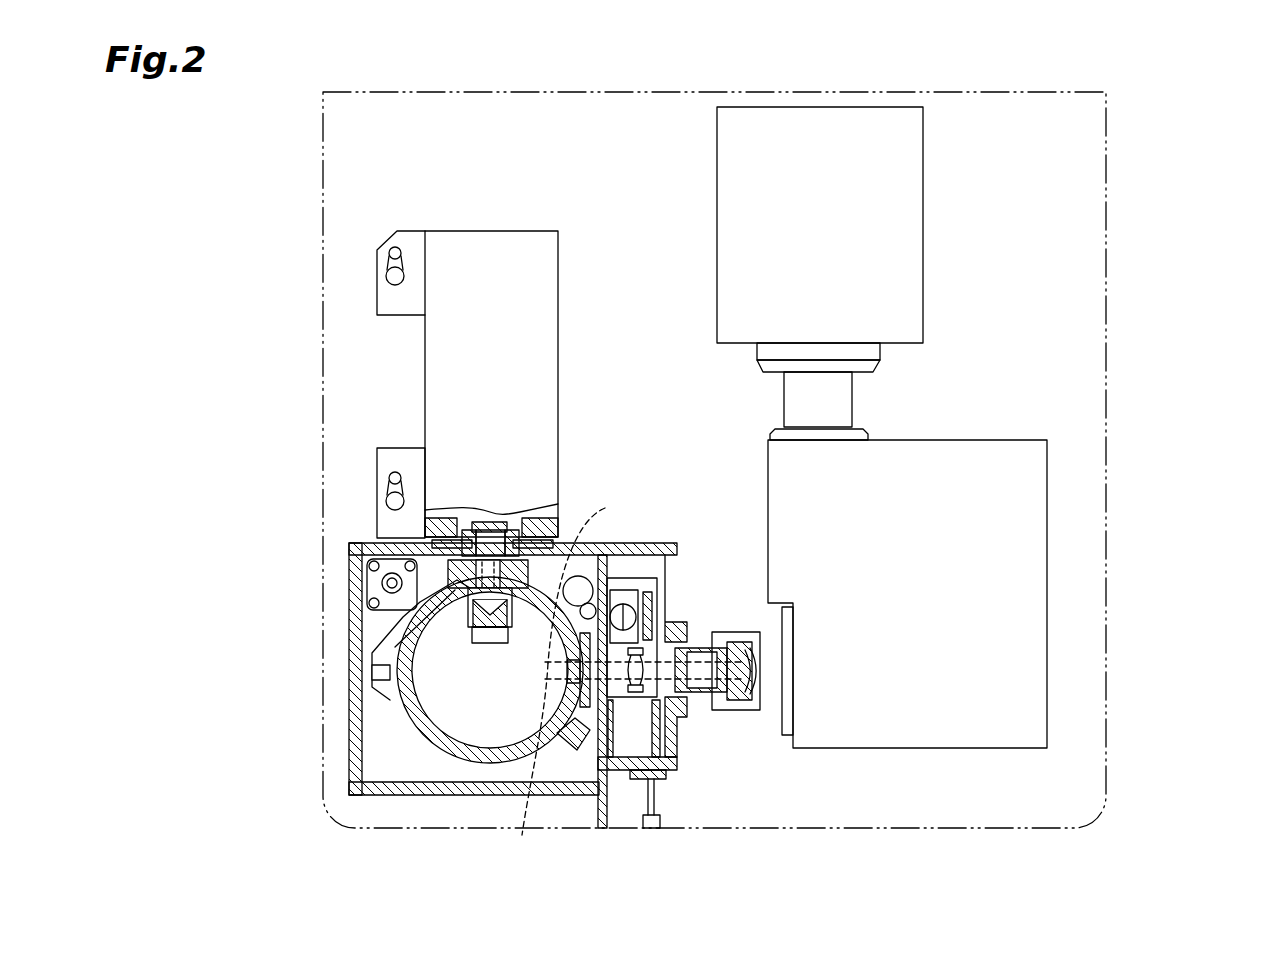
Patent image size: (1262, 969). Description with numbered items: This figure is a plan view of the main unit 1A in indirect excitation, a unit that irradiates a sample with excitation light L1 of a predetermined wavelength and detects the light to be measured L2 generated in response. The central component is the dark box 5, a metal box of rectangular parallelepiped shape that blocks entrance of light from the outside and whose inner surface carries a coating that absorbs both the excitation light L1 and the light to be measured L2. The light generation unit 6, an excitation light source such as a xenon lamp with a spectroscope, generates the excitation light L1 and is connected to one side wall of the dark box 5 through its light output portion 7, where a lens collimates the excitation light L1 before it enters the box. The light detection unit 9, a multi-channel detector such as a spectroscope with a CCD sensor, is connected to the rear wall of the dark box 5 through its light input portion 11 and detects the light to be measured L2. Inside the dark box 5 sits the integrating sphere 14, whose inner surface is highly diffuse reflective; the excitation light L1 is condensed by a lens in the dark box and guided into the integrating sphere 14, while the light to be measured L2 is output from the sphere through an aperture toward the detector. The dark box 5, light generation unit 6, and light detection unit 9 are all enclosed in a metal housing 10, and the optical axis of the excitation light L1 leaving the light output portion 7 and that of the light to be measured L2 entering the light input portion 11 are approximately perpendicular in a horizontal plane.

The main unit 1A is at (1150, 191).
The dark box 5 is at (348, 715).
The light generation unit 6 is at (923, 247).
The light output portion 7 is at (687, 700).
The light detection unit 9 is at (425, 390).
The housing 10 is at (1108, 520).
The light input portion 11 is at (520, 522).
The integrating sphere 14 is at (434, 742).
The excitation light L1 is at (526, 765).
The light to be measured L2 is at (645, 586).